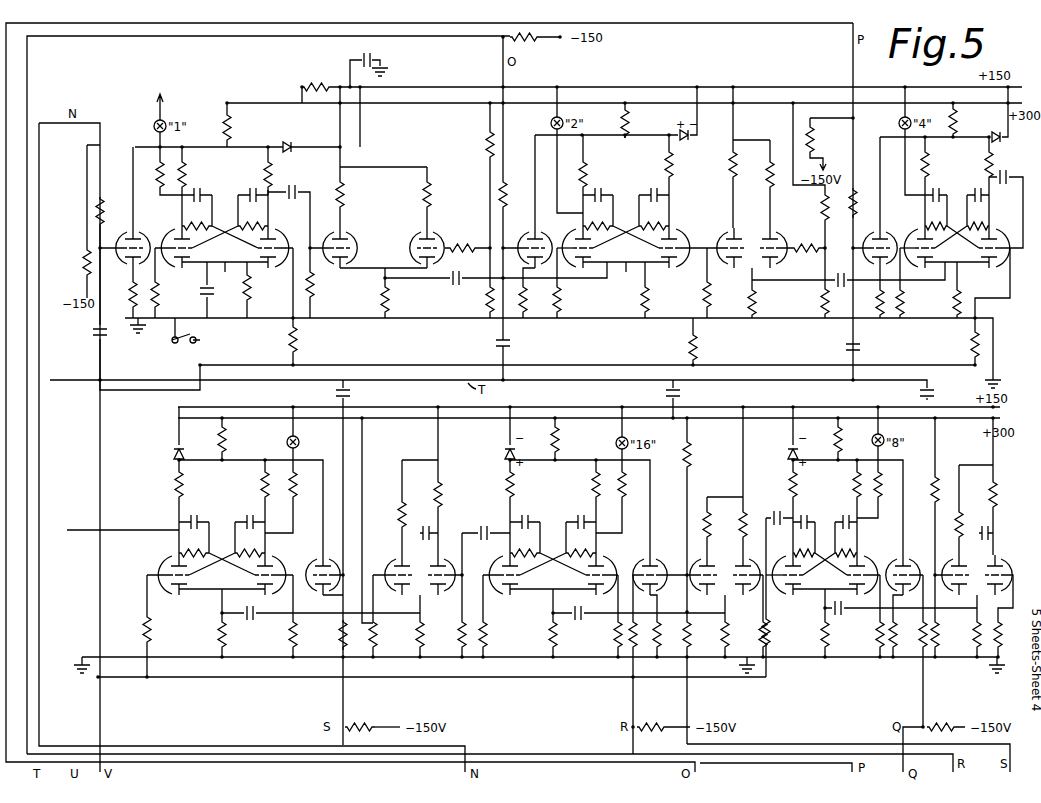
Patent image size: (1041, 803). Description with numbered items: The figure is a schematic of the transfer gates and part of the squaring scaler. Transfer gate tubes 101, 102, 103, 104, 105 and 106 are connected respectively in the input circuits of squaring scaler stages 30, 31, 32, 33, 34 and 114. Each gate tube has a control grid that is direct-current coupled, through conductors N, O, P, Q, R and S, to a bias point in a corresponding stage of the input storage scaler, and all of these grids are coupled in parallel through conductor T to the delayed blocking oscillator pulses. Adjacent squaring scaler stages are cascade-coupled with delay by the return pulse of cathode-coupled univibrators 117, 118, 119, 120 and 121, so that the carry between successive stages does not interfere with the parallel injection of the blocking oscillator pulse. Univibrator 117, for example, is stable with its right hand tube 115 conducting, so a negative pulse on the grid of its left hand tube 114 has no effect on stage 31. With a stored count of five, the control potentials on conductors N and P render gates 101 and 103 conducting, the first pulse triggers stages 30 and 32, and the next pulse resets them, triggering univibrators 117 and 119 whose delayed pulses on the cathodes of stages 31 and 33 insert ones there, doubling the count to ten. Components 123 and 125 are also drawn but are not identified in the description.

The squaring scaler stage 30 is at (236, 256).
The squaring scaler stage 31 is at (637, 256).
The squaring scaler stage 32 is at (969, 256).
The squaring scaler stage 33 is at (836, 583).
The squaring scaler stage 34 is at (565, 583).
The transfer gate tube 101 is at (125, 232).
The transfer gate tube 102 is at (532, 226).
The transfer gate tube 103 is at (885, 234).
The transfer gate tube 104 is at (899, 564).
The transfer gate tube 105 is at (646, 568).
The transfer gate tube 106 is at (318, 560).
The left hand tube 114 is at (208, 583).
The right hand tube 115 is at (452, 210).
The univibrator 117 is at (370, 285).
The univibrator 118 is at (817, 276).
The univibrator 119 is at (1015, 556).
The univibrator 120 is at (725, 584).
The univibrator 121 is at (400, 552).
The diode 123 is at (298, 137).
The plate resistor 125 is at (268, 200).